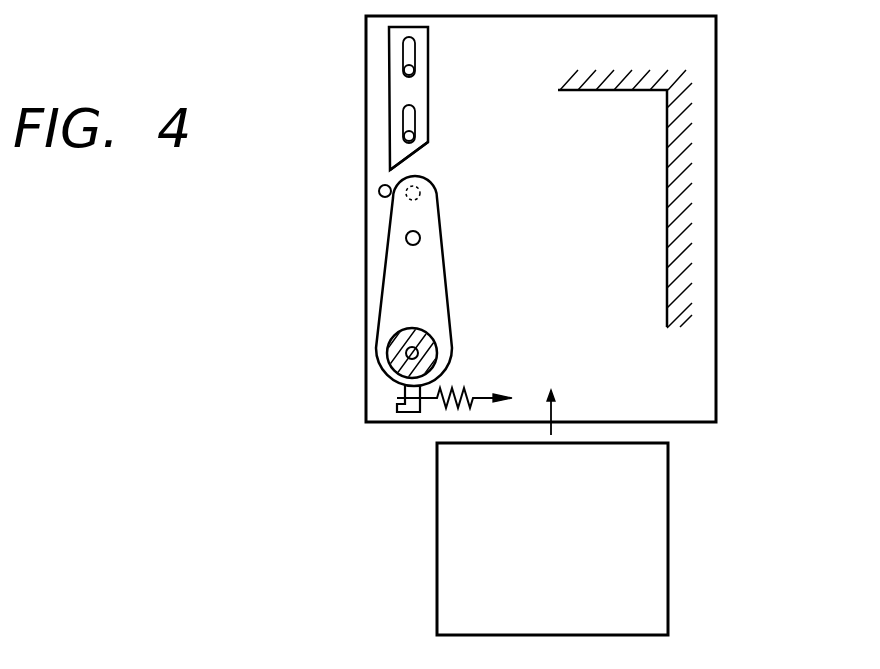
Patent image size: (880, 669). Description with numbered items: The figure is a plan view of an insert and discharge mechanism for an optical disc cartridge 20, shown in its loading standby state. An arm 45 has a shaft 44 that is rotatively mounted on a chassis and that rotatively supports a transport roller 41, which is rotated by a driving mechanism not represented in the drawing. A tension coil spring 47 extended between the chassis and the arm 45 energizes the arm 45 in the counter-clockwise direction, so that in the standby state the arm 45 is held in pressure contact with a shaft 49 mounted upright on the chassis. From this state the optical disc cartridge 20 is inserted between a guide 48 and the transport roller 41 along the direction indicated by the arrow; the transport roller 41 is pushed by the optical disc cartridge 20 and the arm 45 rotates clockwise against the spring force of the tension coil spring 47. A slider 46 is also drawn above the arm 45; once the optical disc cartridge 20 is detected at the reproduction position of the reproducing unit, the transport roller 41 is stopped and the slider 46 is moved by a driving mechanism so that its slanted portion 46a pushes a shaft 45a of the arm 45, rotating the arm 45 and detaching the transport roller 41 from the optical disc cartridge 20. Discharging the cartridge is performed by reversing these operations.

The optical disc cartridge 20 is at (669, 517).
The transport roller 41 is at (388, 367).
The shaft 44 is at (406, 238).
The arm 45 is at (380, 290).
The shaft of the arm 45a is at (393, 163).
The slider 46 is at (428, 58).
The slanted portion 46a is at (424, 152).
The tension coil spring 47 is at (428, 400).
The guide 48 is at (692, 207).
The shaft 49 is at (378, 191).